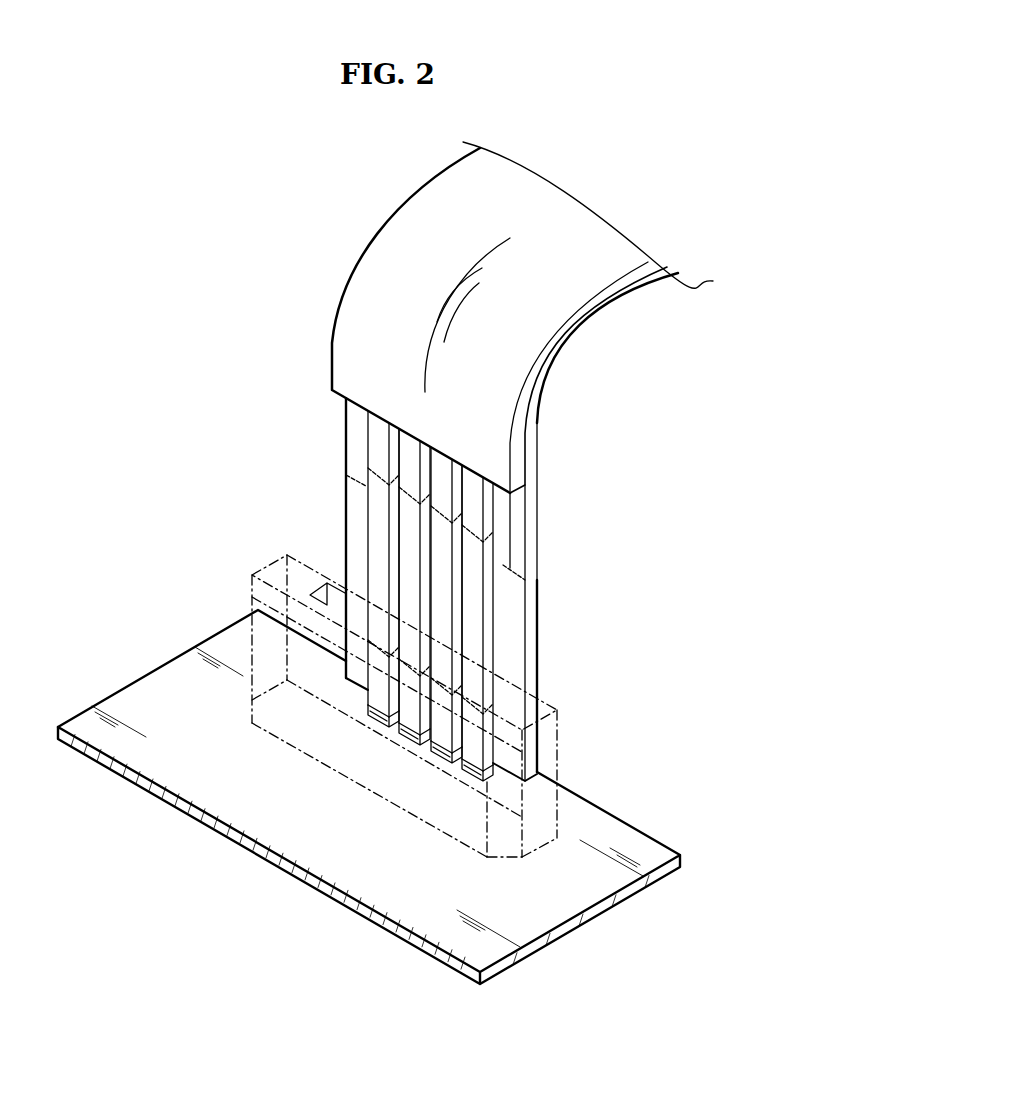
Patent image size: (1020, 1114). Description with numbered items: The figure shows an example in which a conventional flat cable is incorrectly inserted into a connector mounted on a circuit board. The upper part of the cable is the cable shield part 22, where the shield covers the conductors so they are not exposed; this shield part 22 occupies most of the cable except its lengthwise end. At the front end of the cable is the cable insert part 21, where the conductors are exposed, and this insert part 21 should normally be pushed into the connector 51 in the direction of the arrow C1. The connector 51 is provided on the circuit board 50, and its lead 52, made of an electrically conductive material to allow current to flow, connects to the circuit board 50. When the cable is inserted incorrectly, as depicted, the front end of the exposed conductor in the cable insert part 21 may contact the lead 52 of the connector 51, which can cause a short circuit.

The cable shield part 22 is at (593, 366).
The cable insert part 21 is at (563, 610).
The connector 51 is at (268, 563).
The circuit board 50 is at (150, 690).
The lead 52 is at (478, 762).
The arrow C1 is at (410, 628).